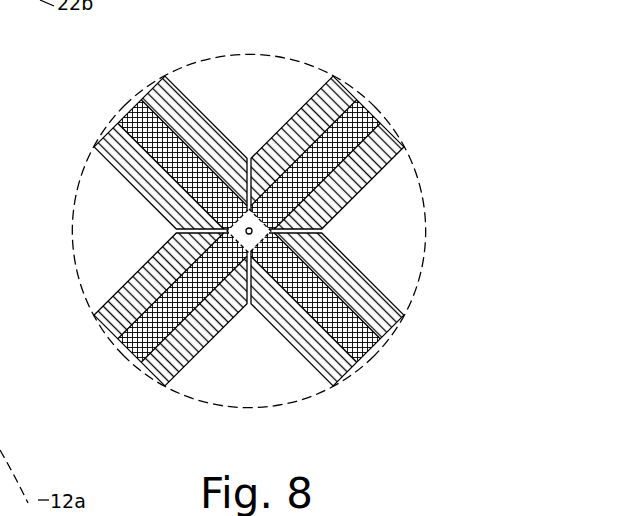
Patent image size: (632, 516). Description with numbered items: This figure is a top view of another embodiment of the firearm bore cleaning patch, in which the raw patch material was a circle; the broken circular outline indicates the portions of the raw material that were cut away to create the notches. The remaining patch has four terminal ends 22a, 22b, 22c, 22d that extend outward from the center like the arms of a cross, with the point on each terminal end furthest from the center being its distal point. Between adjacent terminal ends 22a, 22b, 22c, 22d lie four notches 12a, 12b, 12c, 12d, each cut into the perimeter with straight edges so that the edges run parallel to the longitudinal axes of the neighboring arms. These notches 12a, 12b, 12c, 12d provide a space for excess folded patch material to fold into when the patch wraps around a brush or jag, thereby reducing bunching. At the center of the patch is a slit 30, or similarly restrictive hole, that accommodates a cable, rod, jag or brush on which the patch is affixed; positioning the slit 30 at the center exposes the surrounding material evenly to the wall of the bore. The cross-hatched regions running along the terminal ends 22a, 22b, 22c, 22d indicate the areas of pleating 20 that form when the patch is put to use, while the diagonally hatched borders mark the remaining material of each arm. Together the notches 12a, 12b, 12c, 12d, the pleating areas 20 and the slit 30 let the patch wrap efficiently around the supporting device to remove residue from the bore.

The notch 12a is at (256, 92).
The notch 12b is at (372, 226).
The notch 12c is at (258, 352).
The notch 12d is at (120, 255).
The areas of pleating 20 is at (391, 139).
The terminal end 22a is at (341, 91).
The terminal end 22b is at (349, 373).
The terminal end 22c is at (123, 357).
The terminal end 22d is at (137, 103).
The slit 30 is at (246, 231).